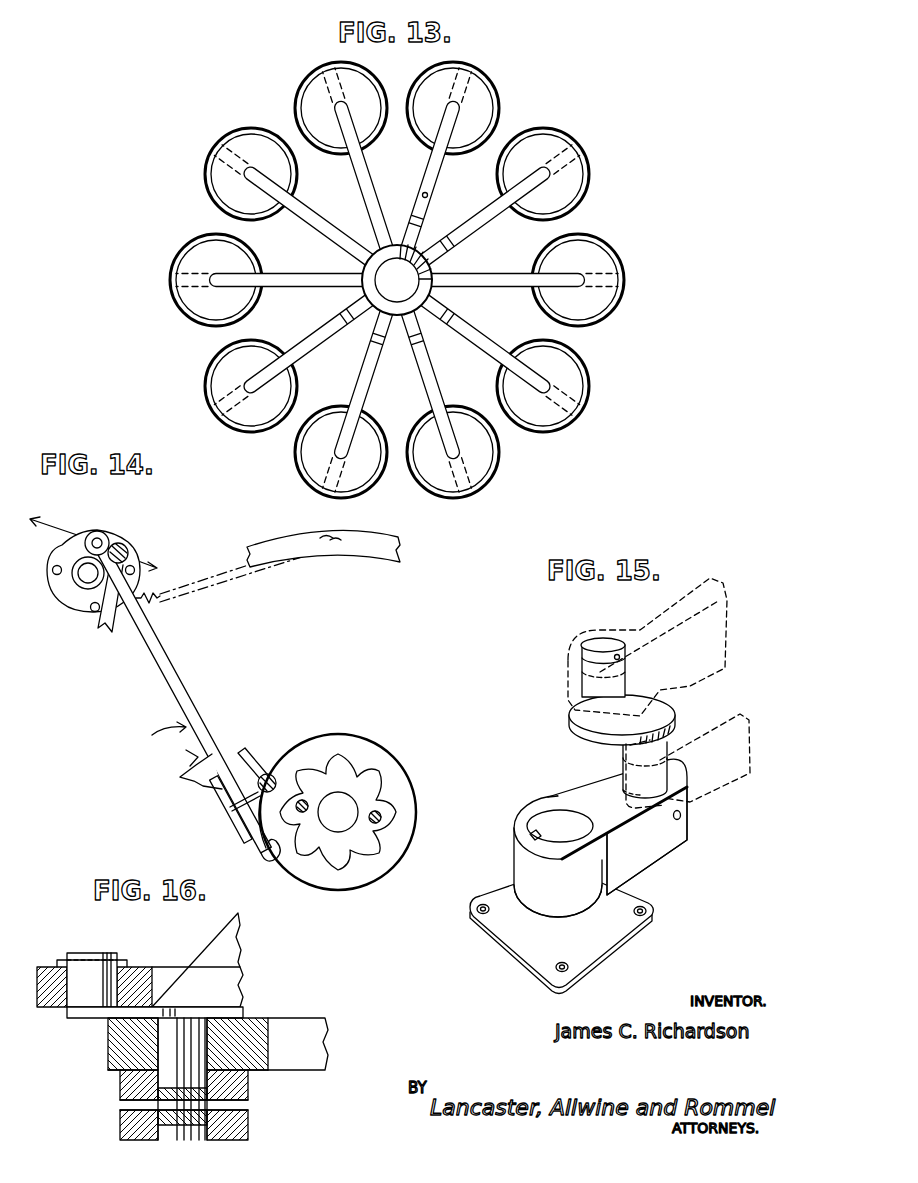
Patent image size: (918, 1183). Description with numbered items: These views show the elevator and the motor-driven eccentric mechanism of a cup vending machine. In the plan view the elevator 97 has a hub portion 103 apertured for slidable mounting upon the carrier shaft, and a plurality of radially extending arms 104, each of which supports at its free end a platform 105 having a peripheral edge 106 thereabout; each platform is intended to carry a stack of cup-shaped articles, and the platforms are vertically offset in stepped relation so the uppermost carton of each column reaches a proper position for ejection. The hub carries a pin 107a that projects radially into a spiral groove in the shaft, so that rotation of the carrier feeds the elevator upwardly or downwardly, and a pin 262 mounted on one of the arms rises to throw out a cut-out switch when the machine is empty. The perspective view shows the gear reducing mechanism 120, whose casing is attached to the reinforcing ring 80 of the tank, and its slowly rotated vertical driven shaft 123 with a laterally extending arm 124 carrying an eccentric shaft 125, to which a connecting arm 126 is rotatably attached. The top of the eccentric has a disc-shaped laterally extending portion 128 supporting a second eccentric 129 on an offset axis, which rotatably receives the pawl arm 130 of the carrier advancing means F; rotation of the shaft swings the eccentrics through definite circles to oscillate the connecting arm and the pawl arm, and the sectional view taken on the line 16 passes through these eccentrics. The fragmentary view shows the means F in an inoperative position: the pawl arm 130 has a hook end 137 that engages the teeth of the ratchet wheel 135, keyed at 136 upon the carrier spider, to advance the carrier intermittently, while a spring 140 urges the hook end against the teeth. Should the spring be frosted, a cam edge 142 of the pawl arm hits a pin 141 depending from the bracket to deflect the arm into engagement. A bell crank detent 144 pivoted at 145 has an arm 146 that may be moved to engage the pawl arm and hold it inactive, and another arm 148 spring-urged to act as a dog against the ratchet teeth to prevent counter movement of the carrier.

In FIG. 14, the section line 16 is at (95, 537).
In FIG. 14, the reinforcing ring 80 is at (377, 556).
In FIG. 13, the elevator 97 is at (295, 272).
In FIG. 13, the hub portion 103 is at (356, 292).
In FIG. 13, the radially extending arms 104 is at (327, 342).
In FIG. 13, the platform 105 is at (262, 440).
In FIG. 13, the peripheral edge 106 is at (230, 422).
In FIG. 13, the pin 107a is at (422, 272).
In FIG. 16, the gear reducing mechanism 120 is at (74, 1012).
In FIG. 14, the driven shaft 123 is at (86, 576).
In FIG. 15, the driven shaft 123 is at (548, 806).
In FIG. 15, the laterally extending arm 124 is at (658, 848).
In FIG. 16, the laterally extending arm 124 is at (238, 1094).
In FIG. 14, the eccentric shaft 125 is at (128, 546).
In FIG. 15, the eccentric shaft 125 is at (654, 775).
In FIG. 16, the eccentric shaft 125 is at (196, 1038).
In FIG. 14, the connecting arm 126 is at (100, 627).
In FIG. 15, the connecting arm 126 is at (732, 705).
In FIG. 16, the connecting arm 126 is at (313, 1039).
In FIG. 15, the laterally extending portion 128 is at (574, 734).
In FIG. 14, the second eccentric 129 is at (94, 533).
In FIG. 15, the second eccentric 129 is at (602, 636).
In FIG. 16, the second eccentric 129 is at (100, 956).
In FIG. 14, the pawl arm 130 is at (163, 672).
In FIG. 15, the pawl arm 130 is at (702, 676).
In FIG. 16, the pawl arm 130 is at (176, 982).
In FIG. 14, the ratchet wheel 135 is at (348, 784).
In FIG. 14, the key 136 is at (303, 812).
In FIG. 14, the hook end 137 is at (268, 860).
In FIG. 14, the spring 140 is at (160, 600).
In FIG. 14, the pin 141 is at (224, 810).
In FIG. 14, the cam edge 142 is at (190, 786).
In FIG. 14, the bell crank detent 144 is at (266, 749).
In FIG. 14, the pivot 145 is at (285, 773).
In FIG. 14, the arm 146 is at (243, 791).
In FIG. 14, the arm 148 is at (245, 758).
In FIG. 13, the pin 262 is at (428, 196).
In FIG. 14, the carrier advancing means F is at (159, 734).